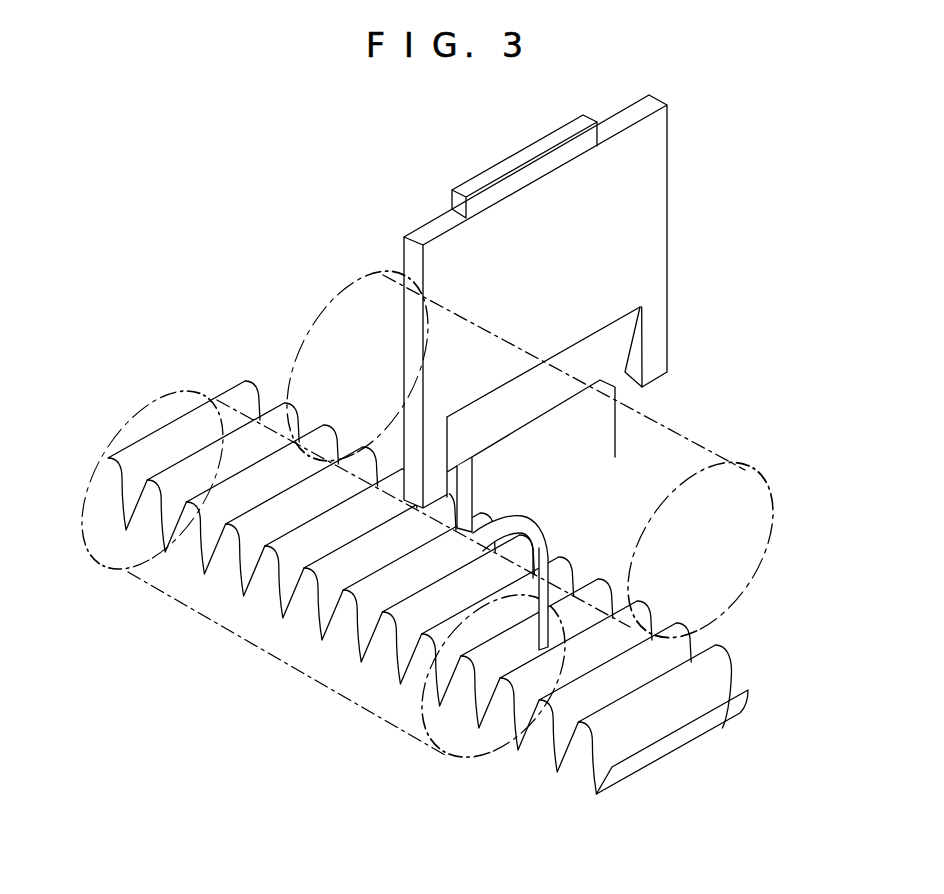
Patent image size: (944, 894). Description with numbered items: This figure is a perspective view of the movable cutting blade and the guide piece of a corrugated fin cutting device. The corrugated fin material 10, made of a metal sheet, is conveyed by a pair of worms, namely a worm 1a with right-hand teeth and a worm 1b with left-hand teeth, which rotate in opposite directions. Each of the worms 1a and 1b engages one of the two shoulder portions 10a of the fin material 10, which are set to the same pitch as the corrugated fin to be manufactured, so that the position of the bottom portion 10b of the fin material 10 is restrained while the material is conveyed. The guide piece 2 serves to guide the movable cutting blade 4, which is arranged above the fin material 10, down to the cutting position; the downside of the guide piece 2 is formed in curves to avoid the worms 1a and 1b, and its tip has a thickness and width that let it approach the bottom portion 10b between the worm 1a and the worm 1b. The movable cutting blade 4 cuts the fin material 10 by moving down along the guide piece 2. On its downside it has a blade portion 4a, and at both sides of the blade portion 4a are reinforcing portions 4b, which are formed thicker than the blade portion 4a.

The worm with right-hand teeth 1a is at (340, 295).
The worm with left-hand teeth 1b is at (152, 393).
The guide piece 2 is at (542, 487).
The movable cutting blade 4 is at (590, 313).
The blade portion 4a is at (528, 425).
The reinforcing portion 4b is at (668, 368).
The fin material 10 is at (441, 619).
The shoulder portion 10a is at (602, 723).
The bottom portion 10b is at (440, 750).